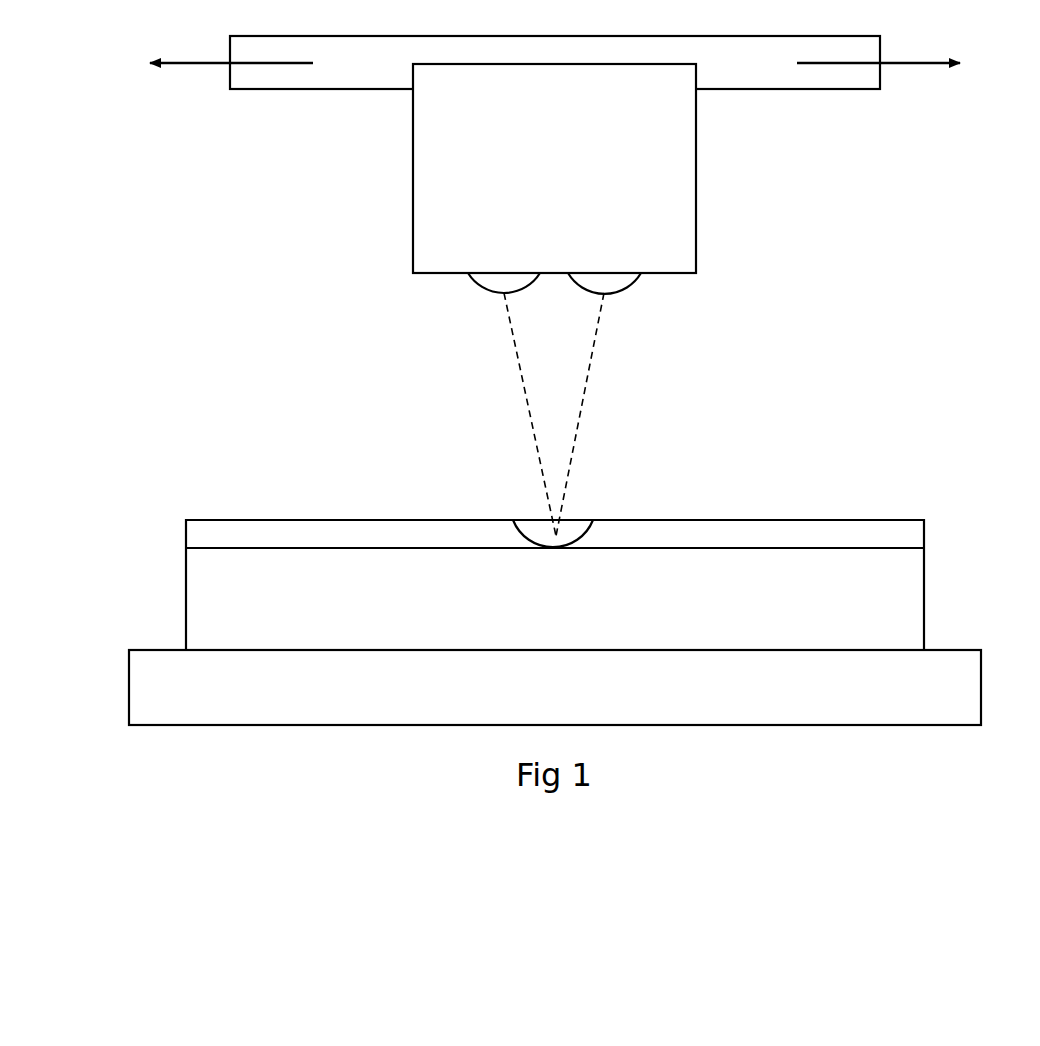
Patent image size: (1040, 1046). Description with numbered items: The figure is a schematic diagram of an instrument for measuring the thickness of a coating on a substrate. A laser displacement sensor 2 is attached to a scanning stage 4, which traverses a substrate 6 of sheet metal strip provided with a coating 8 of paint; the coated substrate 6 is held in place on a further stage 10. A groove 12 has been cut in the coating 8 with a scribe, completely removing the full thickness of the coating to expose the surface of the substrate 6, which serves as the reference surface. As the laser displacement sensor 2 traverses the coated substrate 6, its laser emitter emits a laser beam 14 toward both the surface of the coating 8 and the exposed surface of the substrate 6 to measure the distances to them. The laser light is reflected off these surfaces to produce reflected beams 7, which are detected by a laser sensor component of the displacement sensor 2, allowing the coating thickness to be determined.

The laser displacement sensor 2 is at (686, 120).
The scanning stage 4 is at (310, 80).
The substrate 6 is at (916, 600).
The reflected beams 7 is at (513, 344).
The coating 8 is at (835, 530).
The further stage 10 is at (973, 690).
The groove 12 is at (568, 530).
The laser beam 14 is at (598, 325).